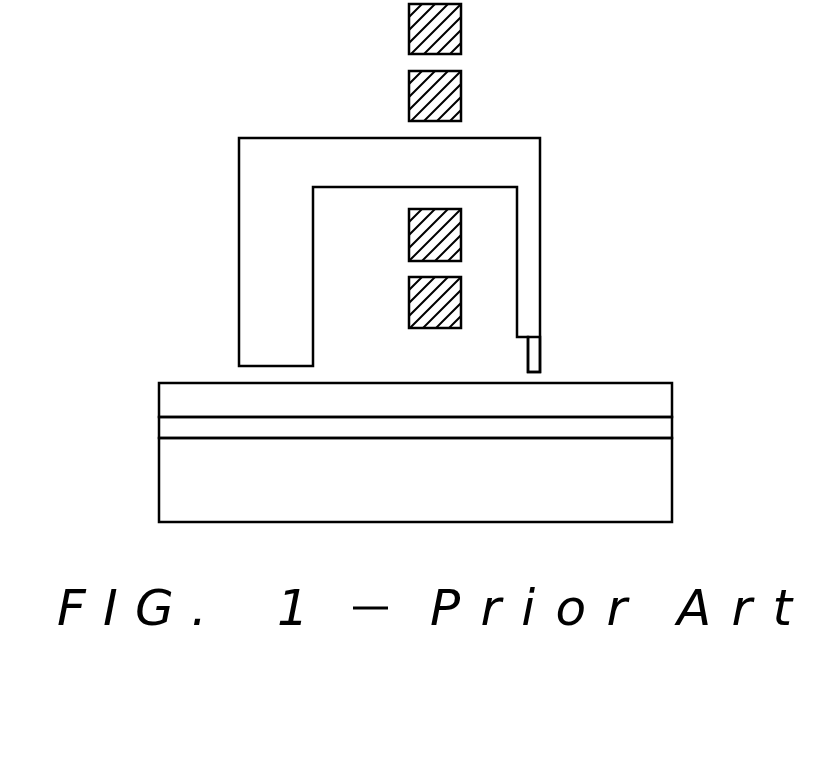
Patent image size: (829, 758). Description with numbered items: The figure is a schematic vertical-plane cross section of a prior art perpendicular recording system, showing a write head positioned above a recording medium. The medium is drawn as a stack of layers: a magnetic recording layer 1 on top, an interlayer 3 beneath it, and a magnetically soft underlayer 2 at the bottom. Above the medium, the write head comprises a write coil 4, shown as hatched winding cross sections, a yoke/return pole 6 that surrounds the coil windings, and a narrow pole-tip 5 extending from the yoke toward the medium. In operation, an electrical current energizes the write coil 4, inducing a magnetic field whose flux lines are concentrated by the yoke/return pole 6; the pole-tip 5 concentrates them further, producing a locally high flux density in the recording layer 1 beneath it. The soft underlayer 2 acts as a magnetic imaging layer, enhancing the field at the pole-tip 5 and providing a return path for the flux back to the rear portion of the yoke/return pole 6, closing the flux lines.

The magnetic recording layer 1 is at (655, 400).
The magnetically soft underlayer 2 is at (655, 487).
The interlayer 3 is at (655, 430).
The write coil 4 is at (417, 25).
The pole-tip 5 is at (535, 355).
The yoke/return pole 6 is at (531, 261).